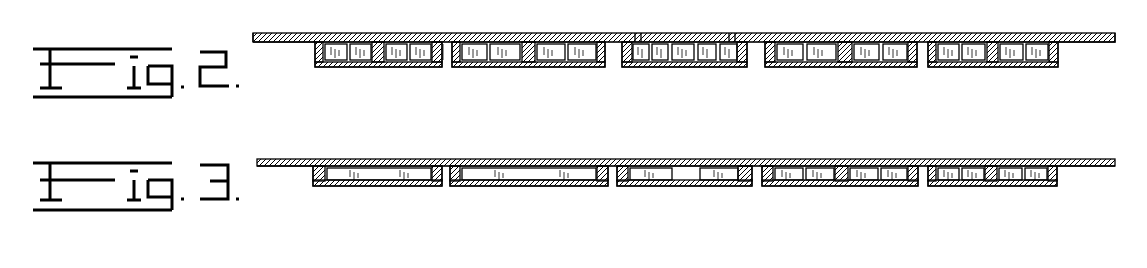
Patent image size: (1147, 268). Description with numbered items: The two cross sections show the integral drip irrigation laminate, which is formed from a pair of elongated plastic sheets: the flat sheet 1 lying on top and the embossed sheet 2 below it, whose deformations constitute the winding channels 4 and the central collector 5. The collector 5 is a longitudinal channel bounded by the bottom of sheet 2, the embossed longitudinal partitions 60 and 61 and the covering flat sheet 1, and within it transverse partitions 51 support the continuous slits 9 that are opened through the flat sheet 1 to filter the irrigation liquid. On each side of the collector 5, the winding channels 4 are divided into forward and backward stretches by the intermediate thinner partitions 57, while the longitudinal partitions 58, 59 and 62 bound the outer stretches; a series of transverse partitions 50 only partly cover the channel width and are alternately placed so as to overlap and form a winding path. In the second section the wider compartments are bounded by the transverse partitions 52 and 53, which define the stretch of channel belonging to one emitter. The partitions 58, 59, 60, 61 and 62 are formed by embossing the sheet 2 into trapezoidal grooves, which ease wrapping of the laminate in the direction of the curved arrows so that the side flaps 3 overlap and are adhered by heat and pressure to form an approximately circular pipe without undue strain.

In FIG. 2, the flat plastic sheet 1 is at (292, 29).
In FIG. 2, the embossed plastic sheet 2 is at (288, 50).
In FIG. 3, the embossed plastic sheet 2 is at (291, 156).
In FIG. 2, the side flap 3 is at (316, 50).
In FIG. 3, the side flap 3 is at (292, 168).
In FIG. 2, the winding channel 4 is at (694, 56).
In FIG. 3, the winding channel 4 is at (681, 180).
In FIG. 2, the collector channel 5 is at (684, 51).
In FIG. 3, the collector channel 5 is at (684, 180).
In FIG. 2, the continuous slit 9 is at (638, 33).
In FIG. 2, the transverse partition 50 is at (510, 42).
In FIG. 3, the transverse partition 50 is at (1011, 166).
In FIG. 2, the transverse partition of collector 51 is at (645, 62).
In FIG. 3, the transverse partition of collector 51 is at (718, 168).
In FIG. 3, the transverse partition 52 is at (520, 172).
In FIG. 3, the transverse partition 53 is at (396, 168).
In FIG. 2, the intermediate thinner partition 57 is at (380, 42).
In FIG. 3, the intermediate thinner partition 57 is at (916, 173).
In FIG. 2, the longitudinal partition 58 is at (318, 67).
In FIG. 3, the longitudinal partition 58 is at (314, 186).
In FIG. 2, the longitudinal partition 59 is at (446, 56).
In FIG. 3, the longitudinal partition 59 is at (446, 163).
In FIG. 2, the longitudinal embossed partition 60 is at (613, 56).
In FIG. 3, the longitudinal embossed partition 60 is at (612, 163).
In FIG. 2, the longitudinal embossed partition 61 is at (758, 56).
In FIG. 3, the longitudinal embossed partition 61 is at (756, 163).
In FIG. 2, the longitudinal partition 62 is at (921, 56).
In FIG. 3, the longitudinal partition 62 is at (924, 163).